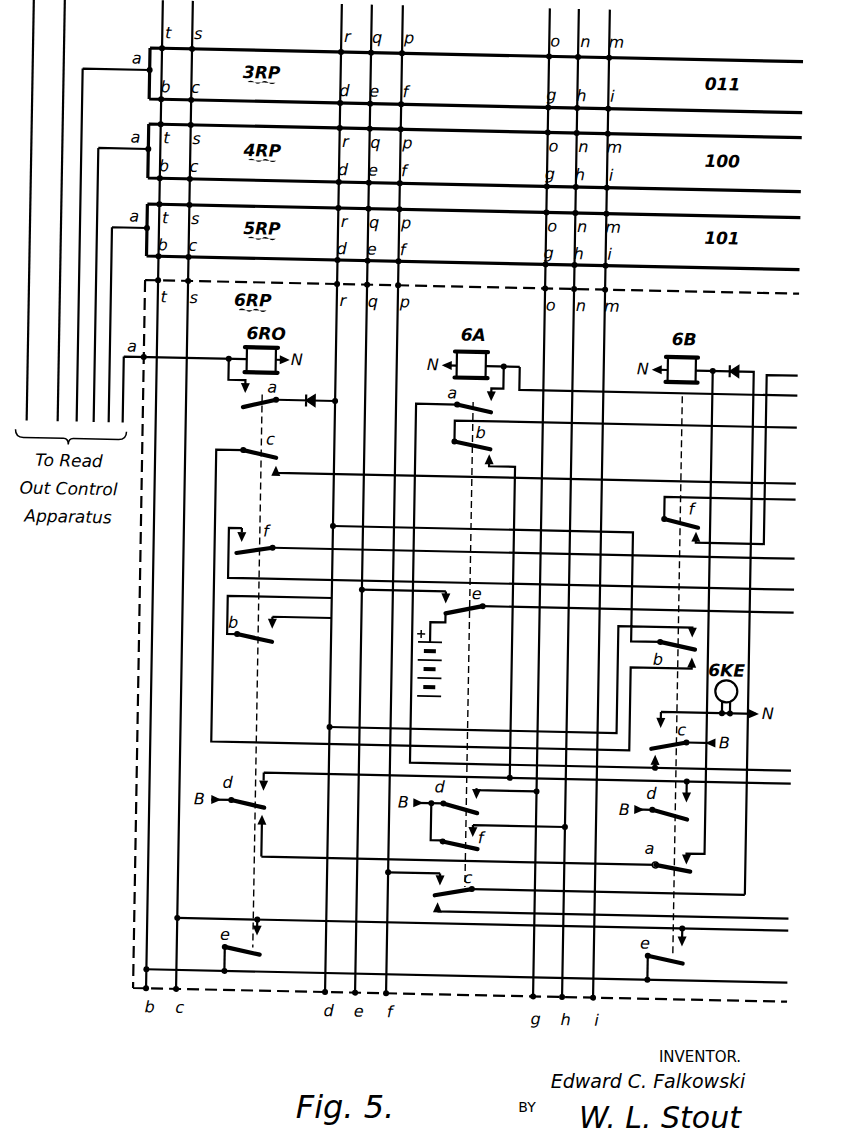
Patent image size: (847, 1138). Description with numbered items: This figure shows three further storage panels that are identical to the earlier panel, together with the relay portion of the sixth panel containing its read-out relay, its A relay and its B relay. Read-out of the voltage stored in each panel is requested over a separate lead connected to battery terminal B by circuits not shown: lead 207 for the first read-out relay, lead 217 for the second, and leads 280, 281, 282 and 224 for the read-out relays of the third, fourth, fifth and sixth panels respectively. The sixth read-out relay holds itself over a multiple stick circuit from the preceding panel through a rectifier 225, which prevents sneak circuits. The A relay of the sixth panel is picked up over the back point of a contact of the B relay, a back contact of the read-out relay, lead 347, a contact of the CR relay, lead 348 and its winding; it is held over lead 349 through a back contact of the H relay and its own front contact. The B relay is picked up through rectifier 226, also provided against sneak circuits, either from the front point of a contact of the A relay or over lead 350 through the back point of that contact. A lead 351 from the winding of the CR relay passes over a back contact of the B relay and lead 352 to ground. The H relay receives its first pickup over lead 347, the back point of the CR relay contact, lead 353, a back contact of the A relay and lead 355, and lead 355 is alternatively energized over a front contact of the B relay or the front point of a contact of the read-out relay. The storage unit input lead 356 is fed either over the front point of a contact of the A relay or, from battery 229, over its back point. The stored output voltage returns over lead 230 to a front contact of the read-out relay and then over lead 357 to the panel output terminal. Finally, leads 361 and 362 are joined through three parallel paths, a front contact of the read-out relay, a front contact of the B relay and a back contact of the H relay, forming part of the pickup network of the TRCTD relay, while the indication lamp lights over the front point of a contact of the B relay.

The lead 207 is at (33, 39).
The lead 217 is at (64, 14).
The lead 280 is at (83, 112).
The lead 281 is at (100, 191).
The lead 282 is at (115, 268).
The lead 224 is at (128, 368).
The rectifier 225 is at (312, 386).
The rectifier 226 is at (733, 347).
The battery 229 is at (450, 678).
The lead 230 is at (536, 543).
The lead 347 is at (535, 471).
The lead 348 is at (659, 381).
The lead 349 is at (603, 587).
The lead 350 is at (611, 903).
The lead 351 is at (745, 447).
The lead 352 is at (732, 510).
The lead 353 is at (626, 421).
The lead 355 is at (525, 792).
The lead 356 is at (641, 599).
The lead 357 is at (514, 559).
The lead 361 is at (465, 969).
The lead 362 is at (192, 440).